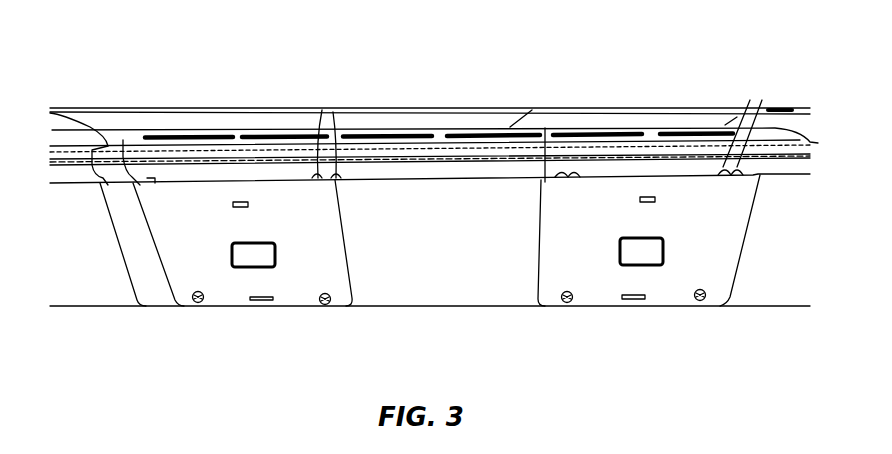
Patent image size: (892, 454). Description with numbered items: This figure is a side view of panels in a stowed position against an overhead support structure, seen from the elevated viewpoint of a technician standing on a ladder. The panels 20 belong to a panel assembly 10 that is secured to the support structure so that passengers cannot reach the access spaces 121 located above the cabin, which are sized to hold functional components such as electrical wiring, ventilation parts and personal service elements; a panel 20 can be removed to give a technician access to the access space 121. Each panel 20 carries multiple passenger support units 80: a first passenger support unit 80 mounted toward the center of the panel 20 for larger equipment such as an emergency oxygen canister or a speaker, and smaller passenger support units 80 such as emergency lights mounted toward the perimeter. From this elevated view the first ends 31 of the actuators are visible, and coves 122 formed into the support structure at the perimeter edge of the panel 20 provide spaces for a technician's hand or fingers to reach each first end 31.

The panel assembly 10 is at (186, 195).
The panel 20 is at (302, 293).
The first end 31 is at (137, 150).
The passenger support unit 80 is at (247, 267).
The access space 121 is at (250, 170).
The cove 122 is at (545, 182).